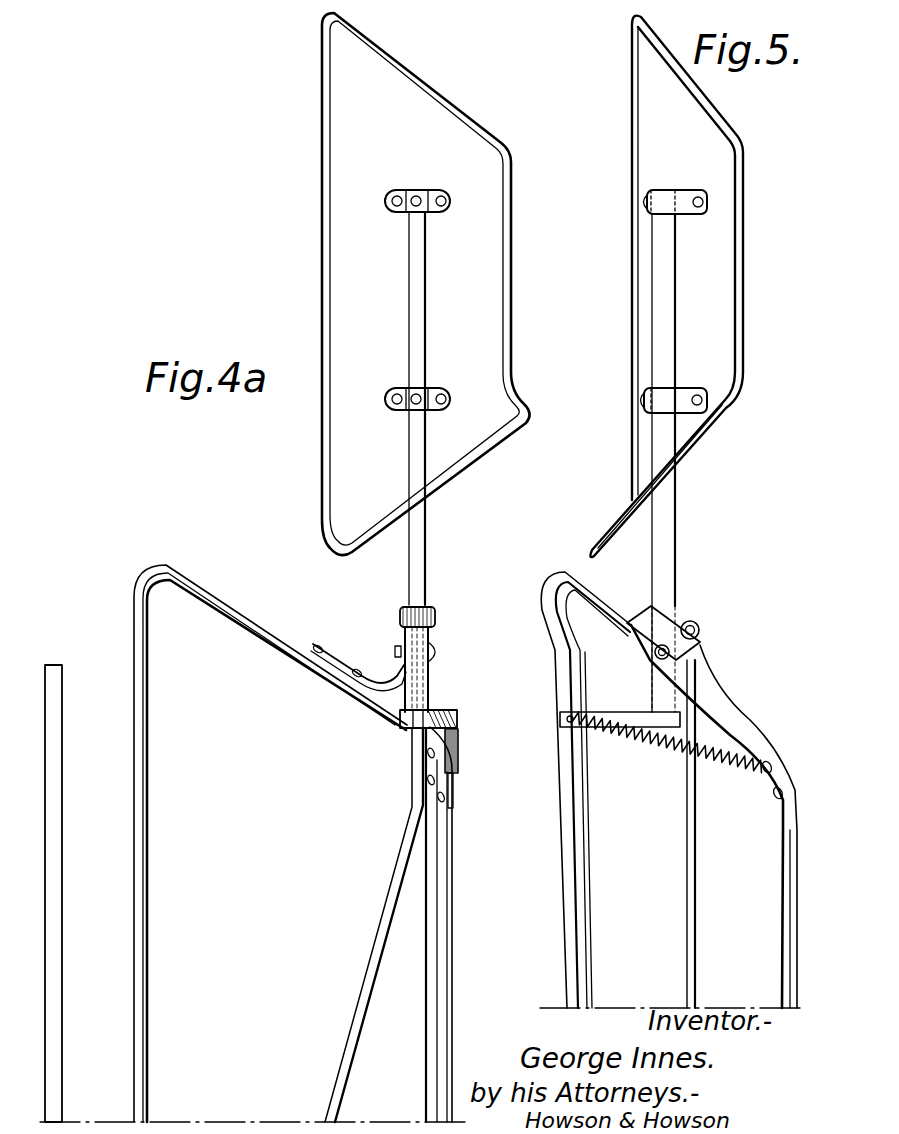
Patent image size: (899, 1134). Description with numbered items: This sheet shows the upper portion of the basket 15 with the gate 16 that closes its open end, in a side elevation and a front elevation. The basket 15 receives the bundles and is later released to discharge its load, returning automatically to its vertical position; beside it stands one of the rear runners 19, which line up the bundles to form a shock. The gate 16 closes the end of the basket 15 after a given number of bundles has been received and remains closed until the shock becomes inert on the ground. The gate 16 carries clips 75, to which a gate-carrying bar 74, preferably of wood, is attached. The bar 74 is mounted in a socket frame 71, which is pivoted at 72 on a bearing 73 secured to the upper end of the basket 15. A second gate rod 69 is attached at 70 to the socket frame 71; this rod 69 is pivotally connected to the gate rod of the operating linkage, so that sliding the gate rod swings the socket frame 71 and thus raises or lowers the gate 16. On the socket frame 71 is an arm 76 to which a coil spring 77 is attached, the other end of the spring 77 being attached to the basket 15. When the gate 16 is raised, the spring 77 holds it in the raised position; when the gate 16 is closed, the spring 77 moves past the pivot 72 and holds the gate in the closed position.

In FIG. 4A, the basket 15 is at (222, 640).
In FIG. 5, the basket 15 is at (592, 678).
In FIG. 4A, the gate 16 is at (482, 272).
In FIG. 5, the gate 16 is at (720, 230).
In FIG. 4A, the rear runner 19 is at (63, 673).
In FIG. 4A, the second gate rod 69 is at (413, 752).
In FIG. 5, the second gate rod 69 is at (697, 853).
In FIG. 4A, the attachment point of second gate rod to socket frame 70 is at (427, 637).
In FIG. 5, the attachment point of second gate rod to socket frame 70 is at (702, 623).
In FIG. 4A, the socket frame 71 is at (407, 693).
In FIG. 5, the socket frame 71 is at (667, 617).
In FIG. 4A, the pivot 72 is at (395, 650).
In FIG. 5, the pivot 72 is at (653, 653).
In FIG. 4A, the bearing 73 is at (394, 681).
In FIG. 5, the bearing 73 is at (707, 697).
In FIG. 4A, the gate-carrying bar 74 is at (420, 322).
In FIG. 5, the gate-carrying bar 74 is at (663, 325).
In FIG. 4A, the clip 75 is at (412, 207).
In FIG. 5, the clip 75 is at (680, 190).
In FIG. 4A, the arm 76 is at (443, 717).
In FIG. 5, the arm 76 is at (633, 712).
In FIG. 4A, the coil spring 77 is at (458, 745).
In FIG. 5, the coil spring 77 is at (643, 748).